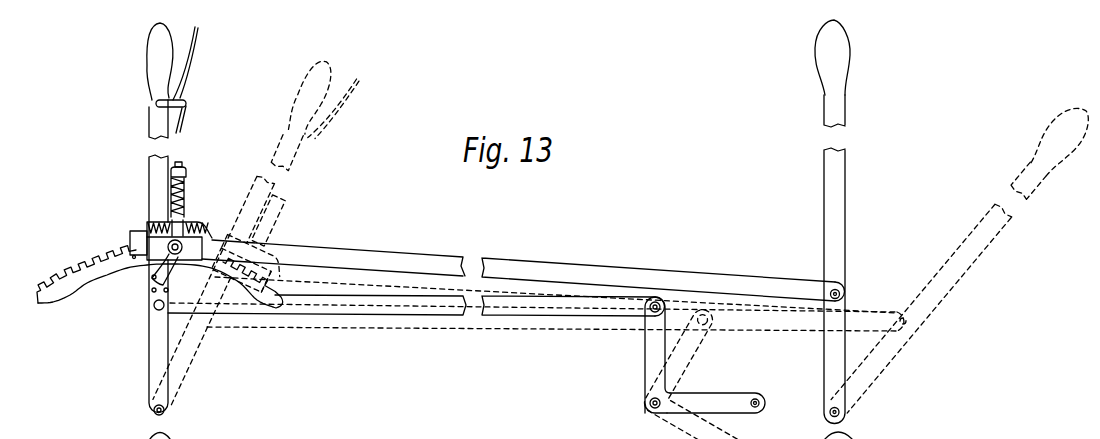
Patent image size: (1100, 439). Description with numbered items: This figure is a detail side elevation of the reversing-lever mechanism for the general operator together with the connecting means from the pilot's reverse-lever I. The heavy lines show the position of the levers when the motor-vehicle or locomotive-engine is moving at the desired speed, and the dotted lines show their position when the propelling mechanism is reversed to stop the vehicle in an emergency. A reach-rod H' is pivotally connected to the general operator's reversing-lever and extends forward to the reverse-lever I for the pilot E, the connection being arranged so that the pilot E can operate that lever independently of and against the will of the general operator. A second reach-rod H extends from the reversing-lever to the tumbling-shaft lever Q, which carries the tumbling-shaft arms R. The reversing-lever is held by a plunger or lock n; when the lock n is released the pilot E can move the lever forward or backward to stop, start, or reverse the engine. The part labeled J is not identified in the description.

The plunger or lock n is at (60, 273).
The left upright post with knob and pawl housing J is at (155, 190).
The pilot E is at (178, 168).
The reach-rod H' is at (523, 254).
The reach-rod H is at (416, 328).
The tumbling-shaft lever Q is at (650, 355).
The tumbling-shaft arms R is at (714, 400).
The reverse-lever for the pilot I is at (842, 207).